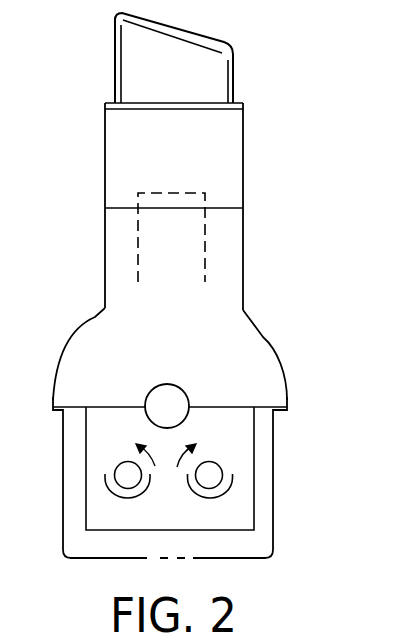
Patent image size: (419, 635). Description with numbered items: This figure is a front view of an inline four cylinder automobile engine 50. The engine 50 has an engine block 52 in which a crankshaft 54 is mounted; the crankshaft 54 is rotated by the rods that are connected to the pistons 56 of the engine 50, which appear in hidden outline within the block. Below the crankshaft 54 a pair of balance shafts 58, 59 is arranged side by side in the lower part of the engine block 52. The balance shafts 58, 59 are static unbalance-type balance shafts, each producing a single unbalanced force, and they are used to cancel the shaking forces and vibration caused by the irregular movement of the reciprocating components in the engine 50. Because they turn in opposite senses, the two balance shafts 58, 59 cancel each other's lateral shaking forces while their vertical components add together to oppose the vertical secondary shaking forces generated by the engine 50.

The engine 50 is at (275, 203).
The engine block 52 is at (268, 353).
The crankshaft 54 is at (169, 384).
The pistons 56 is at (173, 192).
The balance shaft 58 is at (105, 476).
The balance shaft 59 is at (232, 477).